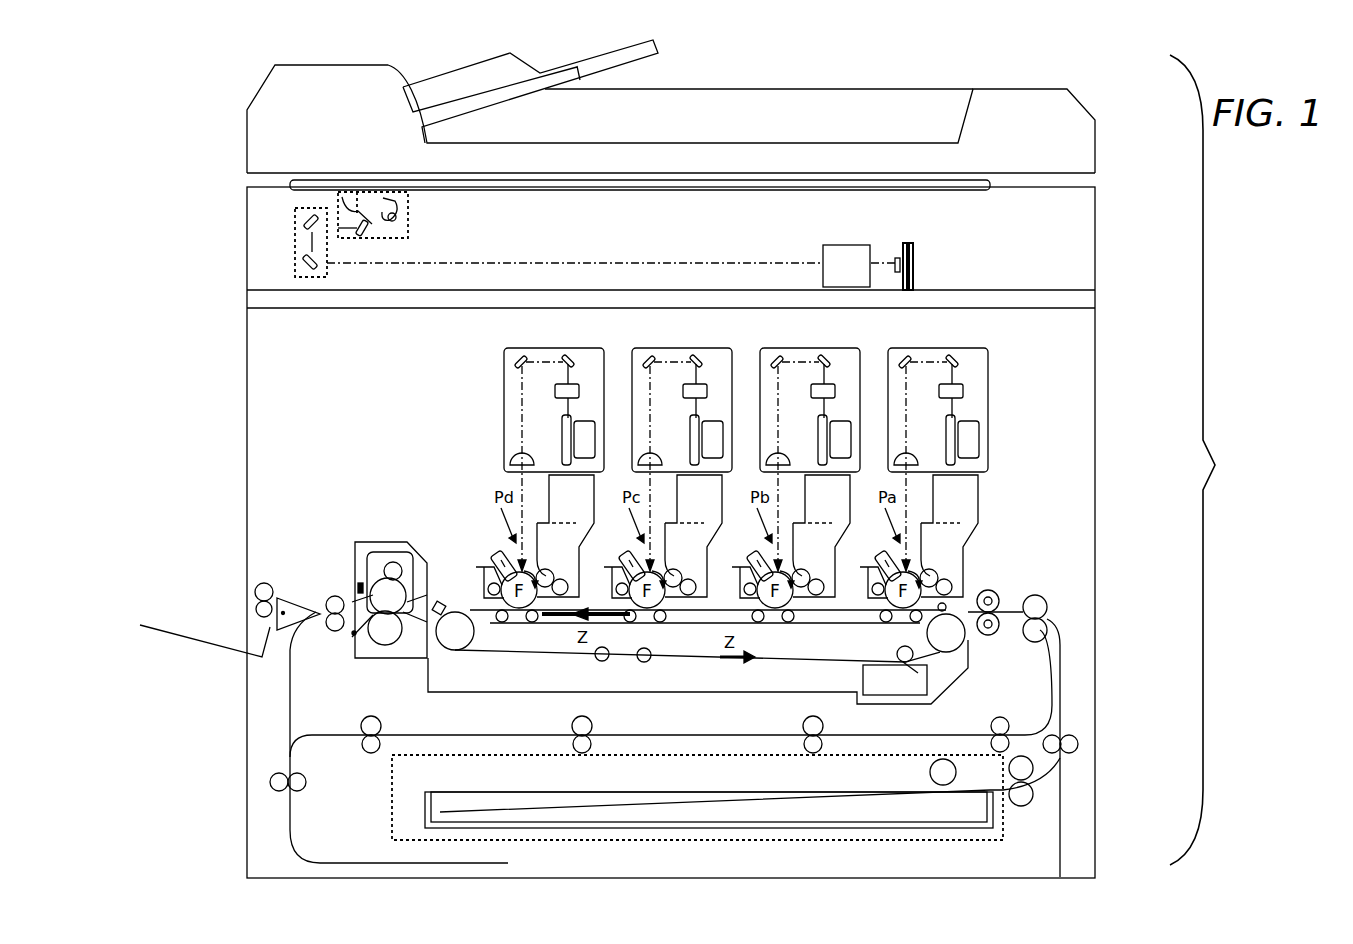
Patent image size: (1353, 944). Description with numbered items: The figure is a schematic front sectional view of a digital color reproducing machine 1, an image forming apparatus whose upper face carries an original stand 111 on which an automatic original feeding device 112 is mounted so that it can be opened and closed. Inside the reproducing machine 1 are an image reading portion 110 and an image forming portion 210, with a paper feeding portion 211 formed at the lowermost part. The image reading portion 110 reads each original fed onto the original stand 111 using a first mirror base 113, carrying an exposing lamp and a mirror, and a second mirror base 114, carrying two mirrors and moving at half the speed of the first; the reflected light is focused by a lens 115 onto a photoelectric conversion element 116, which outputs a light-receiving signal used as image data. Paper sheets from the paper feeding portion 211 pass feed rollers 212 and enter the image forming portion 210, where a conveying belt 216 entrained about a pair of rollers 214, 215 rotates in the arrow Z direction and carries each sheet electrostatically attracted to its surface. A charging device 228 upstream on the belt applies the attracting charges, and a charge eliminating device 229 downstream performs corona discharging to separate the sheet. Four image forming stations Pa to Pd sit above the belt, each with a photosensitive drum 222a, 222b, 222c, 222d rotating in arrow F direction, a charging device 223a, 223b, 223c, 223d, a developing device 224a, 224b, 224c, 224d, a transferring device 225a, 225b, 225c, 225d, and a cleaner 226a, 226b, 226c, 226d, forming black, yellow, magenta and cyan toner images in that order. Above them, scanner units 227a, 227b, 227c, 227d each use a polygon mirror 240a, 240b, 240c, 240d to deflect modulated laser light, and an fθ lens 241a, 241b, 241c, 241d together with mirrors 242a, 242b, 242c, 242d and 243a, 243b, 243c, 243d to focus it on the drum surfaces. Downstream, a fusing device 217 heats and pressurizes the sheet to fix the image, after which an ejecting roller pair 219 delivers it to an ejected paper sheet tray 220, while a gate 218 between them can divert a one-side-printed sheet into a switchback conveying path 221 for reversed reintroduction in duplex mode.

The reproducing machine 1 is at (1207, 460).
The image reading portion 110 is at (1043, 243).
The original stand 111 is at (828, 178).
The automatic original feeding device 112 is at (1086, 146).
The first mirror base 113 is at (338, 205).
The second mirror base 114 is at (295, 262).
The lens 115 is at (870, 245).
The photoelectric conversion element 116 is at (915, 257).
The image forming portion 210 is at (1058, 464).
The paper feeding portion 211 is at (1056, 808).
The registration roller pair 212 is at (996, 592).
The roller 214 is at (475, 648).
The roller 215 is at (952, 660).
The conveying belt 216 is at (702, 662).
The fusing device 217 is at (381, 556).
The gate 218 is at (303, 600).
The ejecting roller pair 219 is at (267, 583).
The ejected paper sheet tray 220 is at (153, 618).
The switchback conveying path 221 is at (306, 783).
The photosensitive drum 222a is at (942, 569).
The photosensitive drum 222b is at (815, 569).
The photosensitive drum 222c is at (686, 569).
The photosensitive drum 222d is at (559, 569).
The charging device 223a is at (875, 553).
The charging device 223b is at (747, 553).
The charging device 223c is at (619, 553).
The charging device 223d is at (484, 543).
The developing device 224a is at (949, 536).
The developing device 224b is at (821, 536).
The developing device 224c is at (693, 536).
The developing device 224d is at (565, 536).
The transferring device 225a is at (887, 631).
The transferring device 225b is at (779, 632).
The transferring device 225c is at (657, 632).
The transferring device 225d is at (523, 632).
The cleaner 226a is at (862, 574).
The cleaner 226b is at (734, 574).
The cleaner 226c is at (606, 574).
The cleaner 226d is at (471, 571).
The scanner unit 227a is at (947, 395).
The scanner unit 227b is at (819, 395).
The scanner unit 227c is at (690, 395).
The scanner unit 227d is at (563, 395).
The charging device 228 is at (955, 604).
The charge eliminating device 229 is at (438, 598).
The polygon mirror 240a is at (944, 440).
The polygon mirror 240b is at (816, 440).
The polygon mirror 240c is at (688, 440).
The polygon mirror 240d is at (560, 440).
The fθ lens 241a is at (936, 402).
The fθ lens 241b is at (808, 402).
The fθ lens 241c is at (680, 402).
The fθ lens 241d is at (552, 402).
The mirror 242a is at (932, 370).
The mirror 242b is at (804, 370).
The mirror 242c is at (676, 370).
The mirror 242d is at (548, 370).
The mirror 243a is at (938, 422).
The mirror 243b is at (785, 421).
The mirror 243c is at (655, 420).
The mirror 243d is at (507, 463).